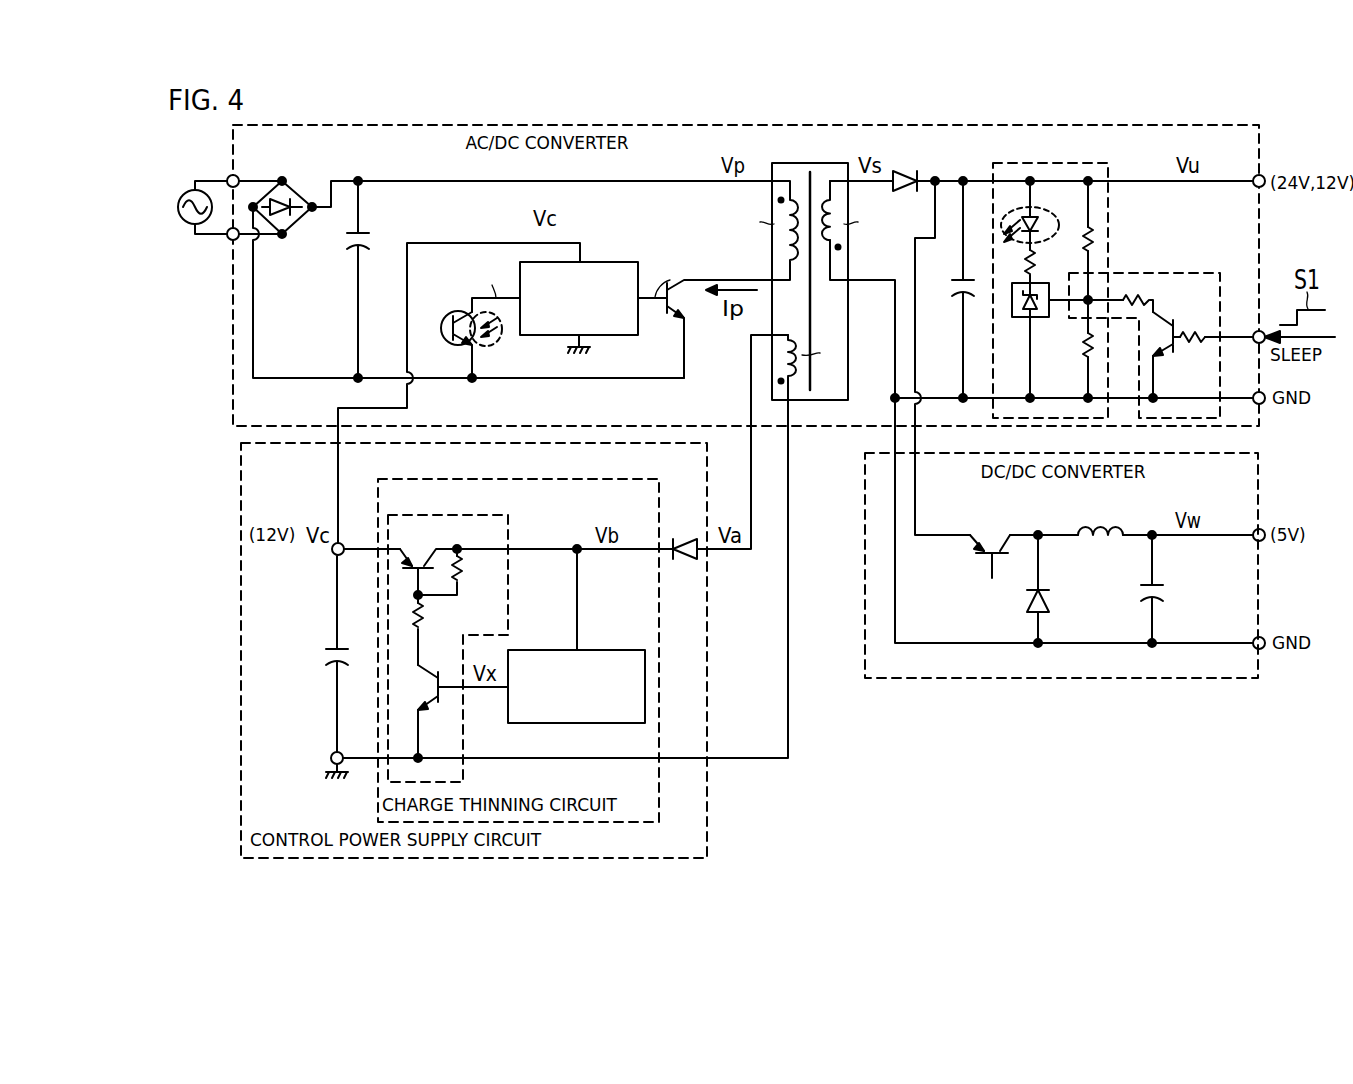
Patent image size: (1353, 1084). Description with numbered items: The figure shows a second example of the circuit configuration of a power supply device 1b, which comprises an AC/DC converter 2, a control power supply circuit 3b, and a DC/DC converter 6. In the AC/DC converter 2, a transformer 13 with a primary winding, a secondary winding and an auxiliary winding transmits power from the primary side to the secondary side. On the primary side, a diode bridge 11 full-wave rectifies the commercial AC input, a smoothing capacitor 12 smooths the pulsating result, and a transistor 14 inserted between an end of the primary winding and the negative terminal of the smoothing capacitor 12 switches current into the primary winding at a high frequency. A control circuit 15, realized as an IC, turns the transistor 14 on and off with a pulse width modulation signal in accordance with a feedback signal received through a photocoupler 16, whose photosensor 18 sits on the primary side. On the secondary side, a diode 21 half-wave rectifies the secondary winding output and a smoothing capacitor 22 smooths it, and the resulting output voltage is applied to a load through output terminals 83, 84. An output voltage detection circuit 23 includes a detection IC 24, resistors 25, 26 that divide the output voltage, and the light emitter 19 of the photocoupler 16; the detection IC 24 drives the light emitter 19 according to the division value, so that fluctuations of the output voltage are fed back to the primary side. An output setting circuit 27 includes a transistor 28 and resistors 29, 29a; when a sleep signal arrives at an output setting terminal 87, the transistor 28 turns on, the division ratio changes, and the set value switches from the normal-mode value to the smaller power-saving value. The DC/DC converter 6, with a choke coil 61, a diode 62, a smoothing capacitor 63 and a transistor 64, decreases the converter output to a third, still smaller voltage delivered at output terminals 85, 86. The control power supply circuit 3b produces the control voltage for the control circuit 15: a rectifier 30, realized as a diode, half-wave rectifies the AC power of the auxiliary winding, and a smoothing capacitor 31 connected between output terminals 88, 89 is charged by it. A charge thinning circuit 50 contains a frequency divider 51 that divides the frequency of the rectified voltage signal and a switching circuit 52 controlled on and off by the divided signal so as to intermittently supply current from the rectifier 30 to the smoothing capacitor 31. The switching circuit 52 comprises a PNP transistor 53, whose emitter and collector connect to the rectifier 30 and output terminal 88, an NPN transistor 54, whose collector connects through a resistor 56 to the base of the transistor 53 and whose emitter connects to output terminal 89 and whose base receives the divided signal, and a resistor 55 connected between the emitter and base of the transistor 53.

The power supply device 1b is at (904, 741).
The AC/DC converter 2 is at (233, 297).
The control power supply circuit 3b is at (241, 497).
The DC/DC converter 6 is at (865, 495).
The diode bridge 11 is at (298, 192).
The smoothing capacitor 12 is at (361, 237).
The transformer 13 is at (770, 260).
The transistor 14 is at (669, 308).
The control circuit 15 is at (613, 262).
The photocoupler 16 is at (457, 313).
The photosensor 18 is at (453, 340).
The light emitter 19 is at (1012, 238).
The diode 21 is at (899, 192).
The smoothing capacitor 22 is at (958, 278).
The output voltage detection circuit 23 is at (1022, 163).
The detection IC 24 is at (1020, 322).
The resistor 25 is at (1083, 245).
The resistor 26 is at (1083, 345).
The output setting circuit 27 is at (1134, 273).
The transistor 28 is at (1178, 342).
The resistor 29 is at (1140, 300).
The resistor 29a is at (1188, 331).
The rectifier 30 is at (684, 539).
The smoothing capacitor 31 is at (343, 647).
The charge thinning circuit 50 is at (578, 479).
The frequency divider 51 is at (606, 650).
The switching circuit 52 is at (410, 515).
The PNP transistor 53 is at (415, 557).
The NPN transistor 54 is at (422, 671).
The resistor 55 is at (463, 575).
The resistor 56 is at (424, 624).
The choke coil 61 is at (1096, 528).
The diode 62 is at (1049, 592).
The smoothing capacitor 63 is at (1160, 585).
The transistor 64 is at (1001, 541).
The output terminal 83 is at (1255, 176).
The output terminal 84 is at (1255, 392).
The output terminal 85 is at (1255, 529).
The output terminal 86 is at (1255, 637).
The output setting terminal 87 is at (1255, 330).
The output terminal 88 is at (332, 553).
The output terminal 89 is at (330, 754).